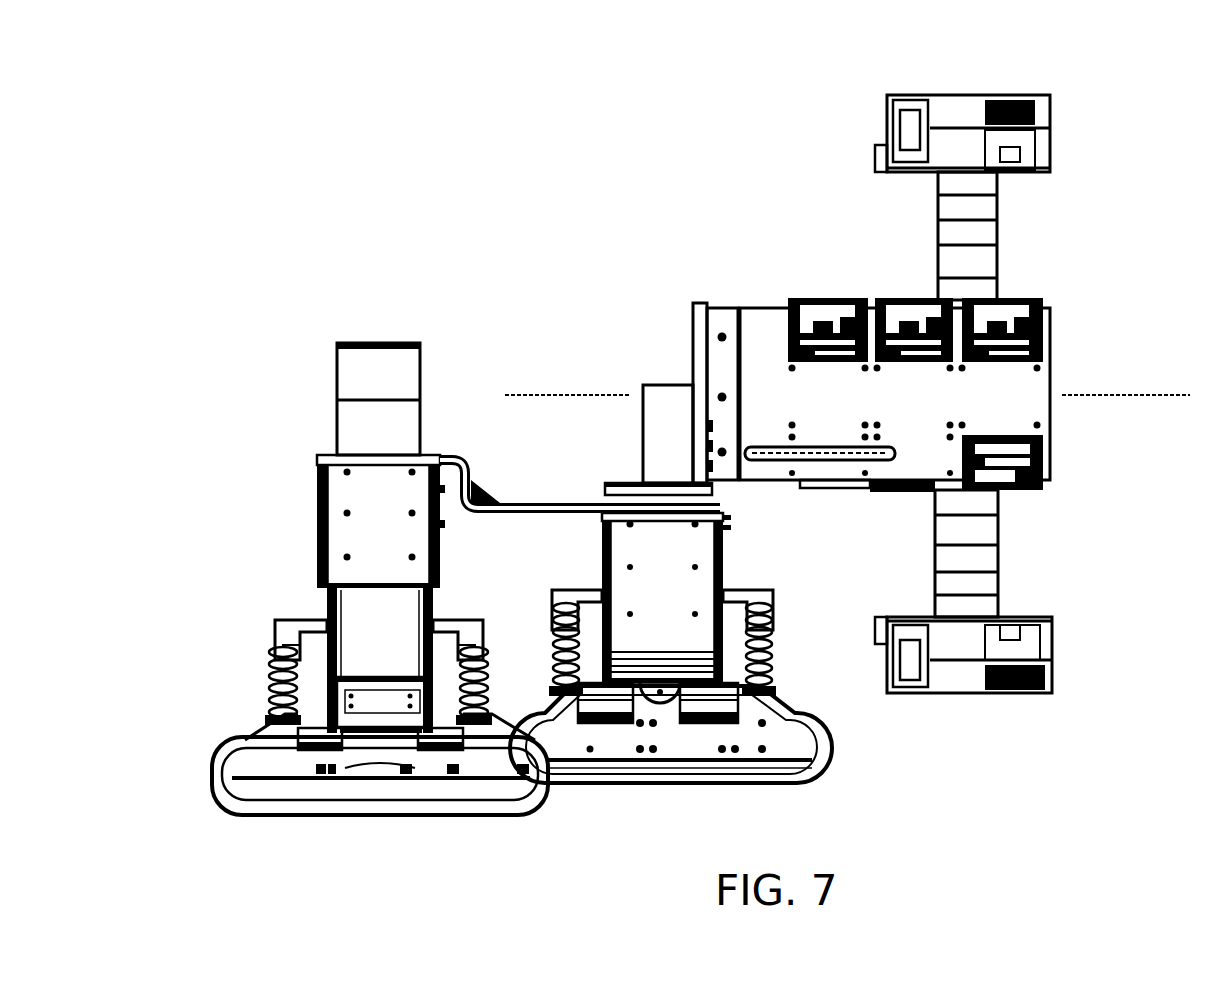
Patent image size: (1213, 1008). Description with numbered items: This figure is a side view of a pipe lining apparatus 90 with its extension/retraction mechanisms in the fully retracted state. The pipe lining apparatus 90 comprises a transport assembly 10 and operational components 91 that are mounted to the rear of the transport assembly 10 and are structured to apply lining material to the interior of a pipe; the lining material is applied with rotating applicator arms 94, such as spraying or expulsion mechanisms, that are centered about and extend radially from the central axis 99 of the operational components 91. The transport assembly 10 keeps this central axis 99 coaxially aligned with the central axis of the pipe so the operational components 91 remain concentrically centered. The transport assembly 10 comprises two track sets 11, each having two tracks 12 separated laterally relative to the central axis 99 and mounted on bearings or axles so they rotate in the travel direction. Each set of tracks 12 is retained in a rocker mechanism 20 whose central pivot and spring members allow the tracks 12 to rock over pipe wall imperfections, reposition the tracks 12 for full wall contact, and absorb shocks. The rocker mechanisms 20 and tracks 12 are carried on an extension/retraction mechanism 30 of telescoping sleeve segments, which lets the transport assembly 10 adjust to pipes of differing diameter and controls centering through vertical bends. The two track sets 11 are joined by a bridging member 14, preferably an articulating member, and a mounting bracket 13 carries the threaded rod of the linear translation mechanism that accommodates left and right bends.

The transport assembly 10 is at (345, 298).
The track set 11 is at (210, 708).
The track 12 is at (218, 808).
The mounting bracket 13 is at (665, 383).
The bridging member 14 is at (528, 500).
The rocker mechanism 20 is at (270, 628).
The extension/retraction mechanism 30 is at (317, 508).
The pipe lining apparatus 90 is at (430, 185).
The operational components 91 is at (1128, 158).
The rotating applicator arm 94 is at (985, 95).
The central axis 99 is at (1140, 393).